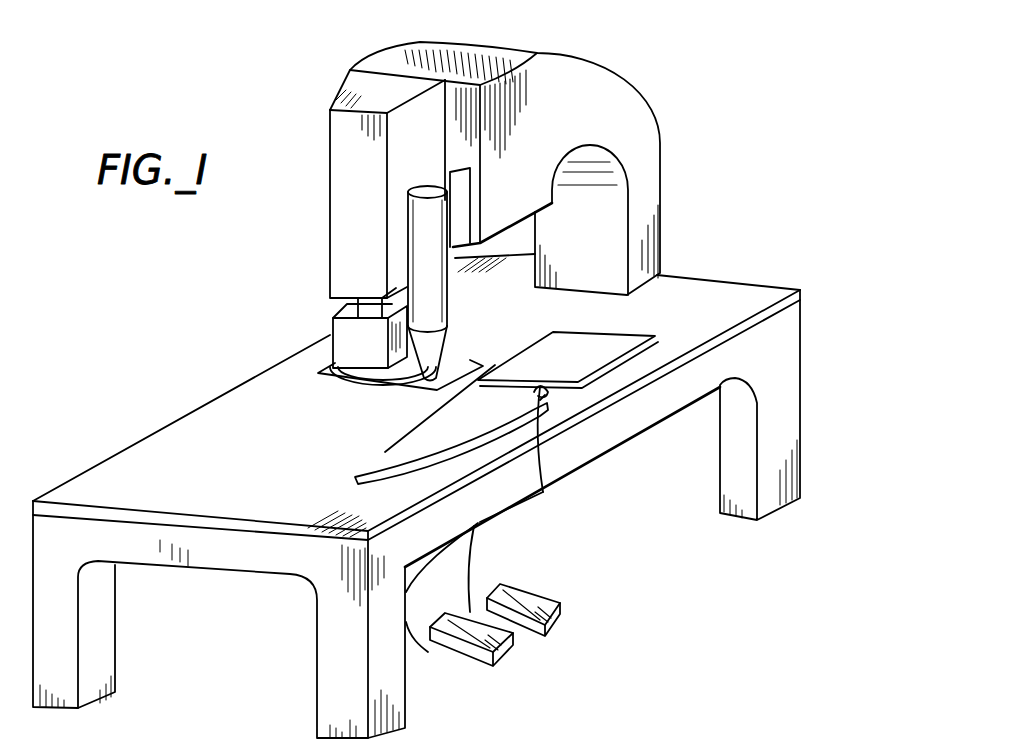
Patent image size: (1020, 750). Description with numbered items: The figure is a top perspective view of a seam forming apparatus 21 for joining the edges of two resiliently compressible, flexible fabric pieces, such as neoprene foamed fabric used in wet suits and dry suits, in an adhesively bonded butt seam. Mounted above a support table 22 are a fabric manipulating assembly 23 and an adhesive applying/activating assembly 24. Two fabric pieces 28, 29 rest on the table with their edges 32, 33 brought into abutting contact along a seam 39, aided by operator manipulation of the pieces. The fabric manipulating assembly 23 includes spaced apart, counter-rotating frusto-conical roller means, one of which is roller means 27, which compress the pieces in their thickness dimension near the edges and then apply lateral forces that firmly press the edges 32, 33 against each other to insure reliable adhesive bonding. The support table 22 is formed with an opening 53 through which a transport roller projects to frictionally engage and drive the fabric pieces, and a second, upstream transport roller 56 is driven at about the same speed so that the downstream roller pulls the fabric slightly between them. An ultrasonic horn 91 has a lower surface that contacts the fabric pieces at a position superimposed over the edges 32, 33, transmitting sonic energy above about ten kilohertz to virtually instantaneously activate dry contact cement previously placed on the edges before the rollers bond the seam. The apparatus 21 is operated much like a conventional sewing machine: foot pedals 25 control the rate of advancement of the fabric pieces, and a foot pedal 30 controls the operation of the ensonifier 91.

The seam forming apparatus 21 is at (636, 45).
The support table 22 is at (187, 443).
The fabric manipulating assembly 23 is at (298, 329).
The adhesive applying/activating assembly 24 is at (497, 313).
The foot pedals 25 is at (563, 616).
The roller means 27 is at (360, 383).
The fabric piece 28 is at (606, 348).
The fabric piece 29 is at (405, 450).
The foot pedal 30 is at (513, 652).
The edge 32 is at (545, 395).
The edge 33 is at (541, 480).
The seam 39 is at (490, 382).
The opening 53 is at (353, 373).
The upstream transport roller 56 is at (450, 392).
The ultrasonic horn 91 is at (415, 222).